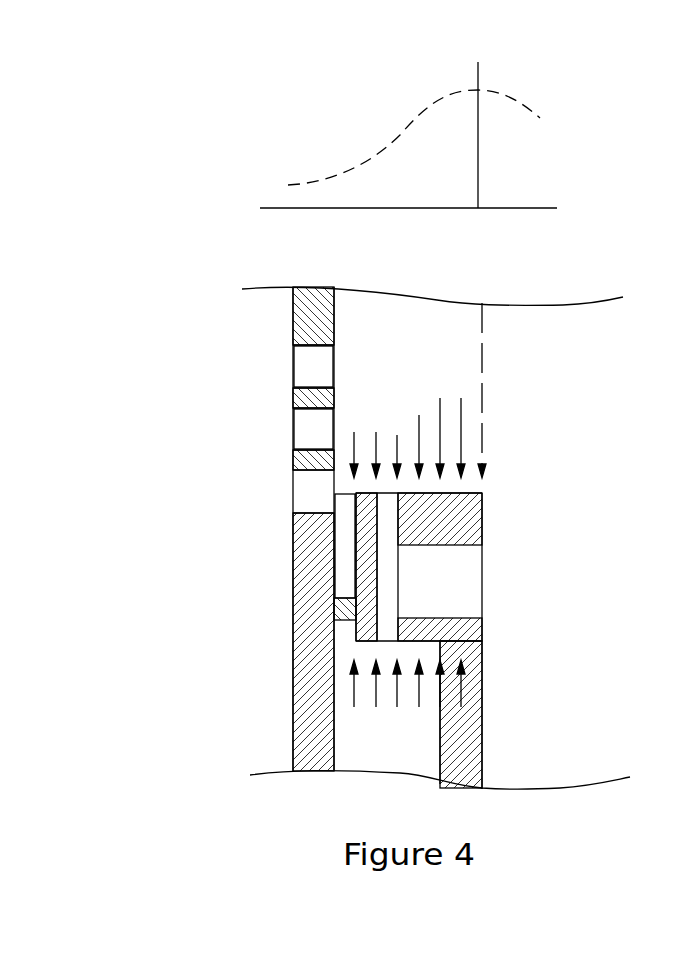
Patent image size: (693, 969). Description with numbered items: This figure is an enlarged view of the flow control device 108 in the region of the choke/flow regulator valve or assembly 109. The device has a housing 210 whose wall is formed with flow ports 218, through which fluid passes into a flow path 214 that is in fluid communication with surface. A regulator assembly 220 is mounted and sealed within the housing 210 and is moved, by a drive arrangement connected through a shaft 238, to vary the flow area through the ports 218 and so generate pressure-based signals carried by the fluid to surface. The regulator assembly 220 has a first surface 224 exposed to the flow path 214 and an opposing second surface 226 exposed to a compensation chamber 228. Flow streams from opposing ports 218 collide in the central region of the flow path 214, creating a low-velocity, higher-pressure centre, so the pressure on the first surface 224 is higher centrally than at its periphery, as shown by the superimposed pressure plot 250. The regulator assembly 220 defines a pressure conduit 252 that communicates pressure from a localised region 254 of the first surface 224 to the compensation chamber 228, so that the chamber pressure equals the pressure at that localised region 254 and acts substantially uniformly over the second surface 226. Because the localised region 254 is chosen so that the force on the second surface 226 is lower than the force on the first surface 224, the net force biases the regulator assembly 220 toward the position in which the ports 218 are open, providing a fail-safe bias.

The flow control device 108 is at (213, 280).
The choke/flow regulator valve 109 is at (262, 452).
The housing 210 is at (307, 677).
The flow path 214 is at (418, 390).
The flow ports 218 is at (312, 430).
The regulator assembly 220 is at (465, 566).
The first surface 224 is at (468, 490).
The second surface 226 is at (430, 645).
The compensation chamber 228 is at (407, 710).
The shaft 238 is at (470, 740).
The pressure plot 250 is at (385, 138).
The pressure conduit 252 is at (387, 567).
The localised region 254 is at (350, 489).